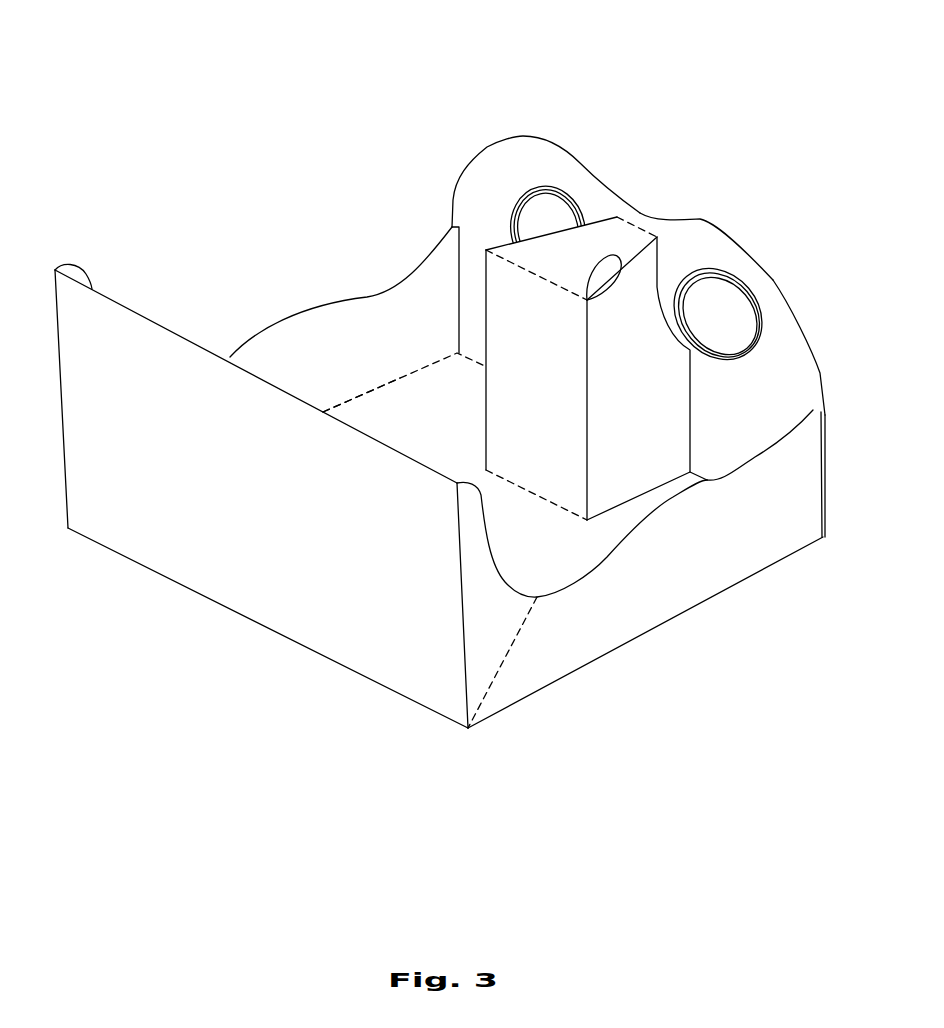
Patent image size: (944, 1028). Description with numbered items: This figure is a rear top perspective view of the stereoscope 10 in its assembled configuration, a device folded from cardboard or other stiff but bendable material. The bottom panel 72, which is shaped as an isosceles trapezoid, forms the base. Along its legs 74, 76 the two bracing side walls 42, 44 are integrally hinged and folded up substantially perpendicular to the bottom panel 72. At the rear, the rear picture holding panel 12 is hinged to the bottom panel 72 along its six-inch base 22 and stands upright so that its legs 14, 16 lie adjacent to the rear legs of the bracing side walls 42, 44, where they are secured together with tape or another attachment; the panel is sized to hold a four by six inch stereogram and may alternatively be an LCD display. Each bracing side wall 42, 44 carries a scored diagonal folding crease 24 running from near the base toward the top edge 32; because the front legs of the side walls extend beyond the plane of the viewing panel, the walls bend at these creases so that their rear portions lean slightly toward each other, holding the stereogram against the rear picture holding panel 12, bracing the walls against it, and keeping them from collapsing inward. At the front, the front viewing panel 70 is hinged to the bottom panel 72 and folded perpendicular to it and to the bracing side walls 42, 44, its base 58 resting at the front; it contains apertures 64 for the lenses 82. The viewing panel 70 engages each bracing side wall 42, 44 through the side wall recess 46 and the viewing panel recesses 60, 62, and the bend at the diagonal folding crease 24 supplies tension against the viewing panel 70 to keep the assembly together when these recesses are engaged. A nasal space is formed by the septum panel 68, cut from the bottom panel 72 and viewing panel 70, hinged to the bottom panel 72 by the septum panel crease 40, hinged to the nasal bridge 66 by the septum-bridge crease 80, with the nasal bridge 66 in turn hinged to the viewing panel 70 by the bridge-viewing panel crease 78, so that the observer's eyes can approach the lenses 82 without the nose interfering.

The stereoscope 10 is at (697, 97).
The rear picture holding panel 12 is at (230, 543).
The leg of rear picture holding panel 14 is at (62, 397).
The leg of rear picture holding panel 16 is at (467, 690).
The base of rear picture holding panel 22 is at (322, 657).
The diagonal folding crease 24 is at (503, 663).
The top edge of bracing side wall 32 is at (540, 598).
The septum panel crease 40 is at (538, 495).
The bracing side wall 42 is at (617, 608).
The bracing side wall 44 is at (248, 352).
The recess of bracing side wall 46 is at (820, 373).
The base of viewing panel 58 is at (700, 477).
The recess on viewing panel 60 is at (825, 467).
The recess on viewing panel 62 is at (452, 227).
The aperture 64 is at (533, 207).
The nasal bridge 66 is at (573, 202).
The septum panel 68 is at (503, 303).
The front viewing panel 70 is at (487, 177).
The bottom panel 72 is at (423, 400).
The leg of bottom panel 74 is at (713, 598).
The leg of bottom panel 76 is at (360, 393).
The bridge-viewing panel crease 78 is at (640, 215).
The septum-bridge crease 80 is at (602, 248).
The lens 82 is at (553, 190).